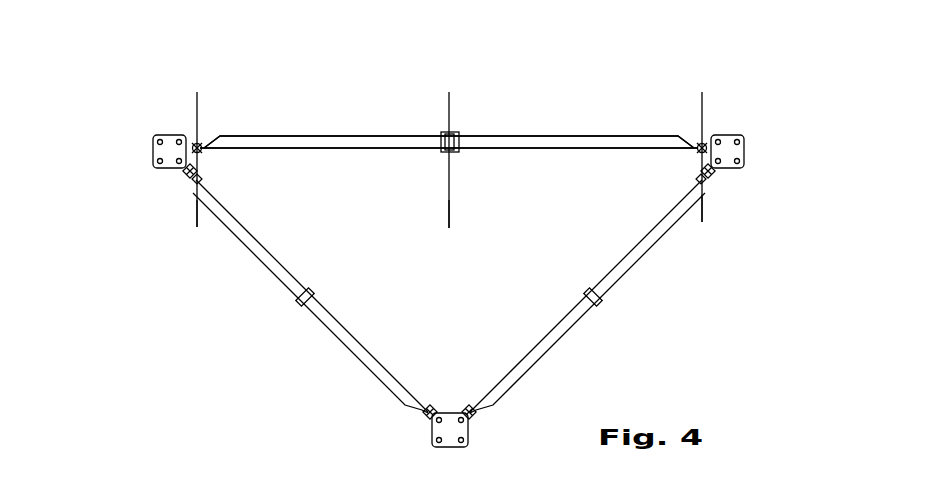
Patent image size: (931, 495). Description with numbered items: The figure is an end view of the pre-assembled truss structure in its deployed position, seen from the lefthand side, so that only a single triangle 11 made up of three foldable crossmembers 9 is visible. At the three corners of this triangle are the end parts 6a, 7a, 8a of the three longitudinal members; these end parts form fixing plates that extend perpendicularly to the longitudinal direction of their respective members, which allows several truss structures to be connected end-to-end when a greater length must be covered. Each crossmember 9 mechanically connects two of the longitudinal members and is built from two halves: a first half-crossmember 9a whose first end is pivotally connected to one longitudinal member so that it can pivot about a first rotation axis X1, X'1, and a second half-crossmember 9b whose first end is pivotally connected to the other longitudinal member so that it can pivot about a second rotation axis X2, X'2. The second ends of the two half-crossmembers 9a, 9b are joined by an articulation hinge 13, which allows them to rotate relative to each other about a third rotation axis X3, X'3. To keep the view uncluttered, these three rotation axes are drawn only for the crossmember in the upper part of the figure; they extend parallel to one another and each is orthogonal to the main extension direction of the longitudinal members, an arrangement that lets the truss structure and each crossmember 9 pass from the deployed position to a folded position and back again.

The end part of longitudinal member 6a is at (443, 430).
The end part of longitudinal member 7a is at (732, 150).
The end part of longitudinal member 8a is at (165, 149).
The foldable crossmember 9 is at (366, 134).
The first half-crossmember 9a is at (330, 149).
The second half-crossmember 9b is at (556, 149).
The triangle 11 is at (261, 165).
The articulation hinge 13 is at (440, 142).
The first rotation axis X1 is at (182, 146).
The second rotation axis X2 is at (721, 150).
The third rotation axis X3 is at (433, 146).
The first rotation axis X'1 is at (174, 219).
The second rotation axis X'2 is at (729, 216).
The third rotation axis X'3 is at (437, 228).